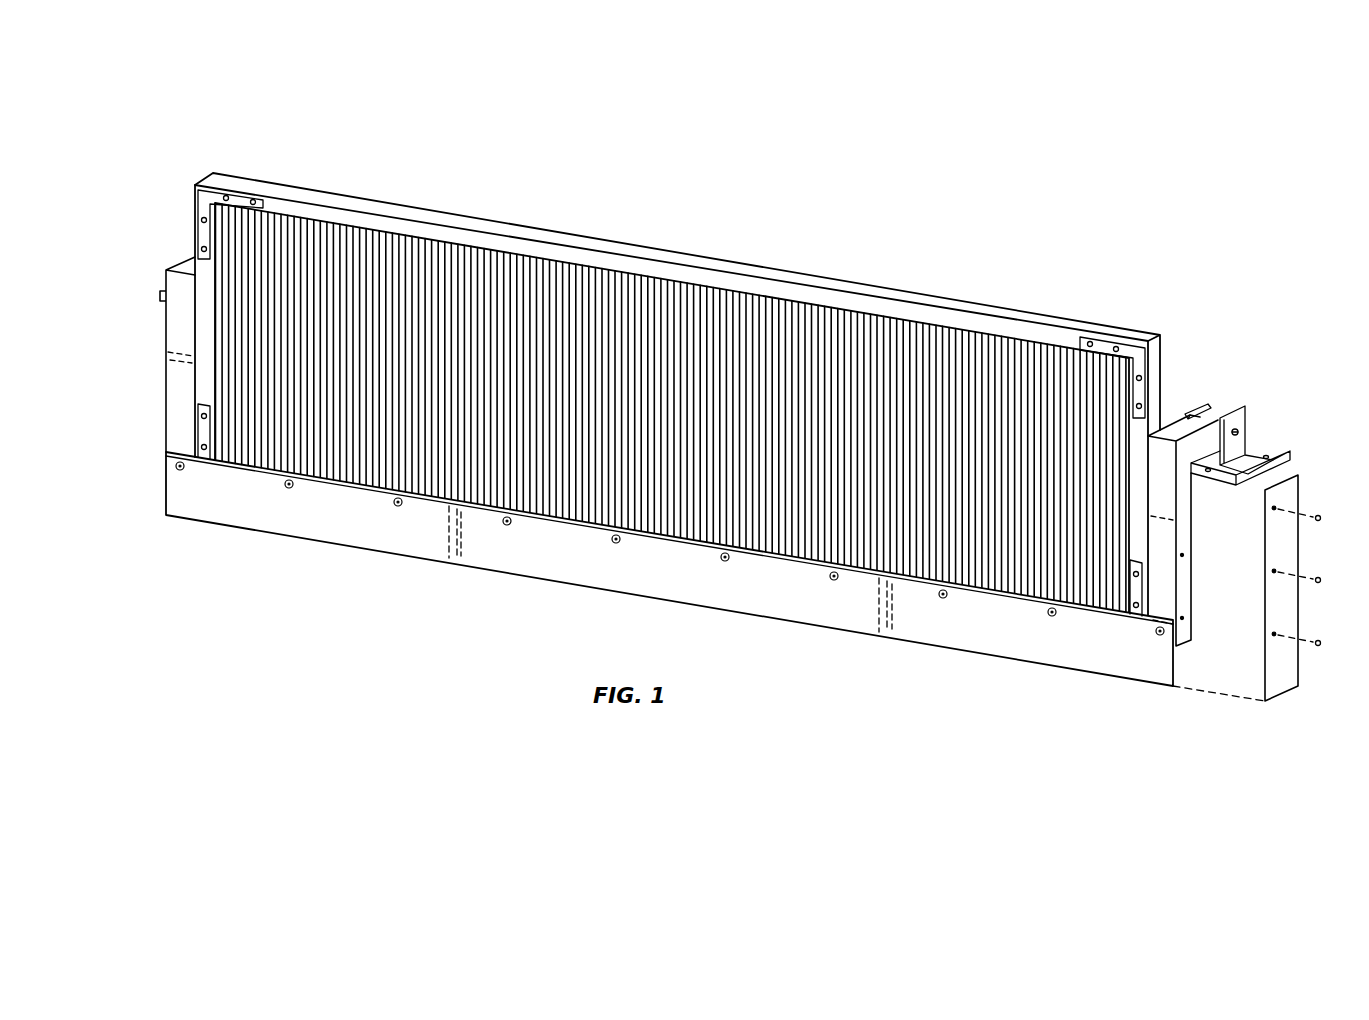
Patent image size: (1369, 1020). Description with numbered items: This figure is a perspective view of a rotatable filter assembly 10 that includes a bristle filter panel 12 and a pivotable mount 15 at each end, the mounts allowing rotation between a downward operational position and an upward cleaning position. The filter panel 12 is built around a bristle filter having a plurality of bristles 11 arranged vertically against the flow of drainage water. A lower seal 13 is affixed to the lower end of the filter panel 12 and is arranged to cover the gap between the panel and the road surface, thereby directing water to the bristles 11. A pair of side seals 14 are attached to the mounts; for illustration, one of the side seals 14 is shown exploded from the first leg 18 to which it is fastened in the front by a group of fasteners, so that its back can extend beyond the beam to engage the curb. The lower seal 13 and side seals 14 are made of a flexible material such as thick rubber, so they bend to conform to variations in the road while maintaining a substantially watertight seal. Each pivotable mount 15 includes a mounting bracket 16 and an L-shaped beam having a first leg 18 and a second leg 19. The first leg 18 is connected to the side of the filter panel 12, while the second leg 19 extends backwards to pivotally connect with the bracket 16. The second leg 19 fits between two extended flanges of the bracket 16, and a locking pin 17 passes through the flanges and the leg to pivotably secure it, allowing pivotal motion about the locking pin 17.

The filter assembly 10 is at (893, 249).
The bristles 11 is at (1014, 346).
The bristle filter panel 12 is at (960, 316).
The lower seal 13 is at (347, 540).
The side seals 14 is at (1282, 549).
The pivotable mount 15 is at (168, 233).
The mounting bracket 16 is at (1246, 442).
The locking pin 17 is at (1242, 422).
The first leg 18 is at (174, 303).
The second leg 19 is at (184, 248).